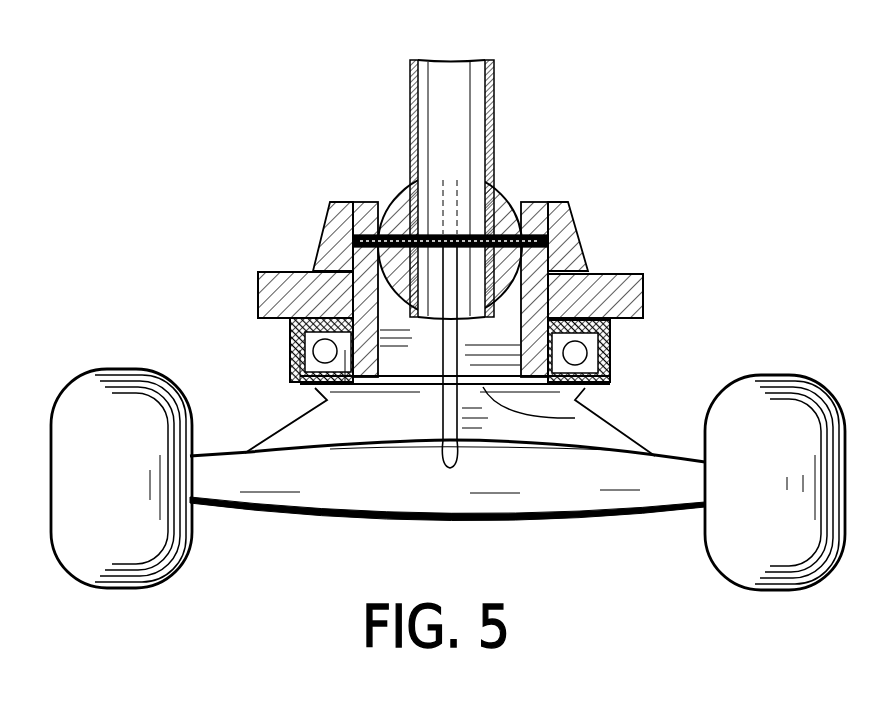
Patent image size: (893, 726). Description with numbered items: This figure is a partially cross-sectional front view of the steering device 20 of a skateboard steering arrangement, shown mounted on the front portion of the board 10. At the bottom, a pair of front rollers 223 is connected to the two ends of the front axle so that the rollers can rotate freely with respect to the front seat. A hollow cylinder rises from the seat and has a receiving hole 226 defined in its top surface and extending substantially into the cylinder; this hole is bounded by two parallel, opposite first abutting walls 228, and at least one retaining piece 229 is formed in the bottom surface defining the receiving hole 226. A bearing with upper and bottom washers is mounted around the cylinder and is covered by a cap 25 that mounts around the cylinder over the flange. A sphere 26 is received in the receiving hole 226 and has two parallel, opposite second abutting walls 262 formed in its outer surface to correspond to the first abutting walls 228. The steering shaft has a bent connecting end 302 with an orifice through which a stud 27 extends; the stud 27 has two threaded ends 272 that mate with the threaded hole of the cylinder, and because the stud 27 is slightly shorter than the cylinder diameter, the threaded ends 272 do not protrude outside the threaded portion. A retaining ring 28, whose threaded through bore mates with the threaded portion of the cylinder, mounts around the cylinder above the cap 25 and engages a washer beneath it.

The steering device 20 is at (306, 120).
The board 10 is at (272, 272).
The retaining ring 28 is at (333, 212).
The cap 25 is at (292, 348).
The sphere 26 is at (500, 205).
The stud 27 is at (462, 228).
The connecting end 302 is at (412, 72).
The first abutting walls 228 is at (364, 206).
The second abutting walls 262 is at (545, 206).
The threaded ends 272 is at (580, 226).
The receiving hole 226 is at (412, 385).
The retaining piece 229 is at (570, 392).
The front rollers 223 is at (768, 374).